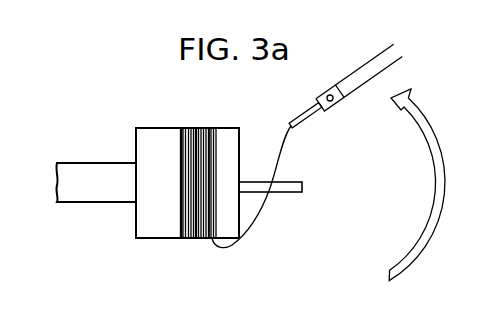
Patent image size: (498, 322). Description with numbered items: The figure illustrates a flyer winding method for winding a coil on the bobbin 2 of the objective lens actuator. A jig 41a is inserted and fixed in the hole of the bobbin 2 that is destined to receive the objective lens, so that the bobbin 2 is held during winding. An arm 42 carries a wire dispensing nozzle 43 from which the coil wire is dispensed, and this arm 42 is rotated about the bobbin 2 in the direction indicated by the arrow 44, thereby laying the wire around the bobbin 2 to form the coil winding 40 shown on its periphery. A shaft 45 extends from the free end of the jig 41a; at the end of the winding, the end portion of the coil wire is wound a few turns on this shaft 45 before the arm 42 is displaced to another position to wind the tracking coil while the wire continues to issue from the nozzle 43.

The bobbin 2 is at (155, 133).
The coil winding 40 is at (198, 133).
The jig 41a is at (100, 170).
The arm 42 is at (364, 84).
The wire dispensing nozzle 43 is at (304, 114).
The arrow 44 is at (430, 216).
The shaft 45 is at (293, 181).